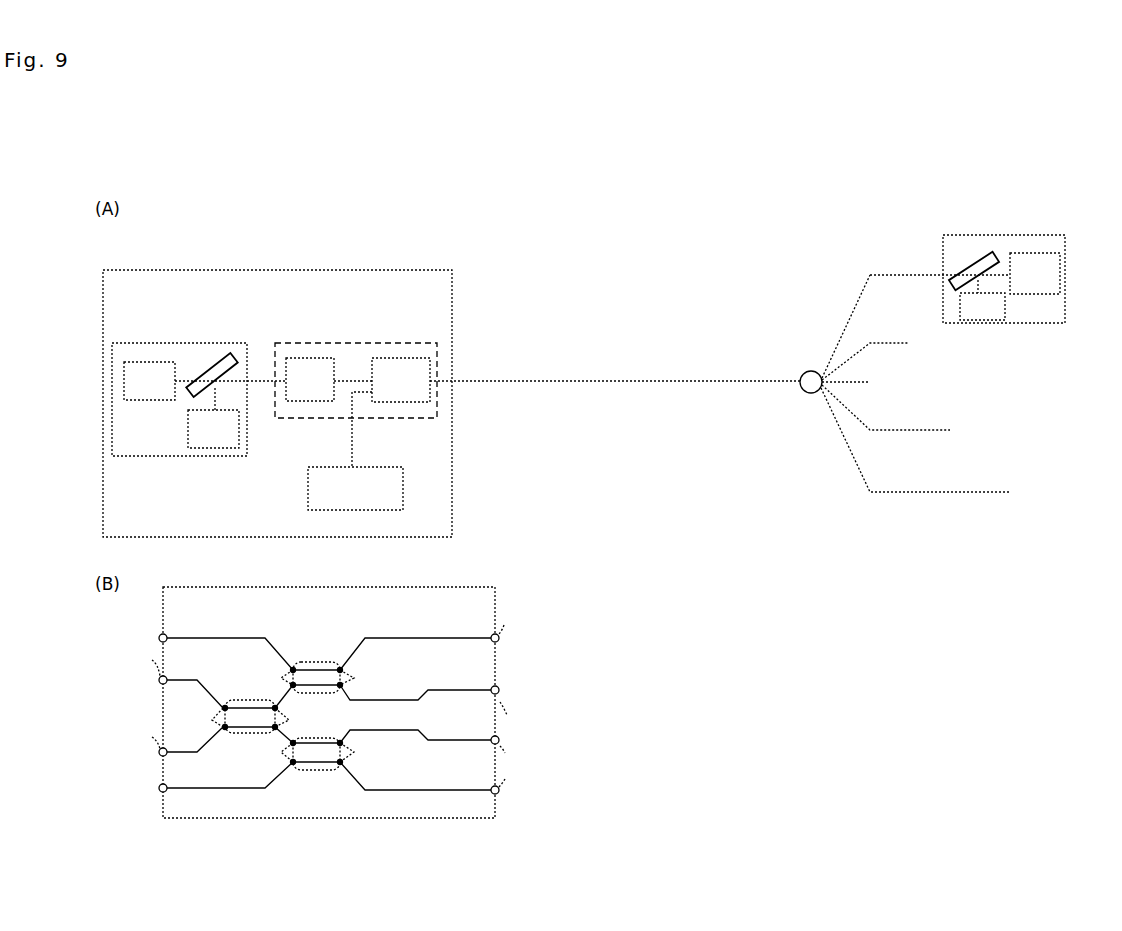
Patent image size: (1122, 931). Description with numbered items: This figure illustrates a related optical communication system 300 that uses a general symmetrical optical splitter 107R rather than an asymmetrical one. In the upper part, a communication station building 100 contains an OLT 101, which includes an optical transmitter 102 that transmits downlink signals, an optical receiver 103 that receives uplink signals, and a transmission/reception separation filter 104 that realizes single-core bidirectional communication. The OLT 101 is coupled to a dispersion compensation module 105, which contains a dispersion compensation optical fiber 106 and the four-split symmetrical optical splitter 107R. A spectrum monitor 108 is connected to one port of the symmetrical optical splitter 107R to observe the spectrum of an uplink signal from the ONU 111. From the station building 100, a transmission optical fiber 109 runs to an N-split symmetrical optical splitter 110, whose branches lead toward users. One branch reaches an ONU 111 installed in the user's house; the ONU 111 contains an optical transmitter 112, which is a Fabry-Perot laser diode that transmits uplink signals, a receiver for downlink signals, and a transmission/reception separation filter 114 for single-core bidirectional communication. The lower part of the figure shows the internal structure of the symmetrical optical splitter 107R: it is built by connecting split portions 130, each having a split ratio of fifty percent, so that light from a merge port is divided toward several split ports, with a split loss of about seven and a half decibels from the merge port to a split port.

The communication station building 100 is at (343, 268).
The OLT 101 is at (187, 343).
The optical transmitter 102 is at (127, 360).
The optical receiver 103 is at (195, 458).
The transmission/reception separation filter 104 is at (227, 358).
The dispersion compensation module 105 is at (328, 337).
The dispersion compensation optical fiber 106 is at (328, 402).
The symmetrical optical splitter 107R is at (420, 402).
The spectrum monitor 108 is at (308, 486).
The transmission optical fiber 109 is at (515, 373).
The N-split symmetrical optical splitter 110 is at (793, 395).
The ONU 111 is at (978, 232).
The optical transmitter 112 is at (1055, 300).
The transmission/reception separation filter 114 is at (980, 252).
The split portion 130 is at (978, 323).
The optical communication system 300 is at (655, 252).